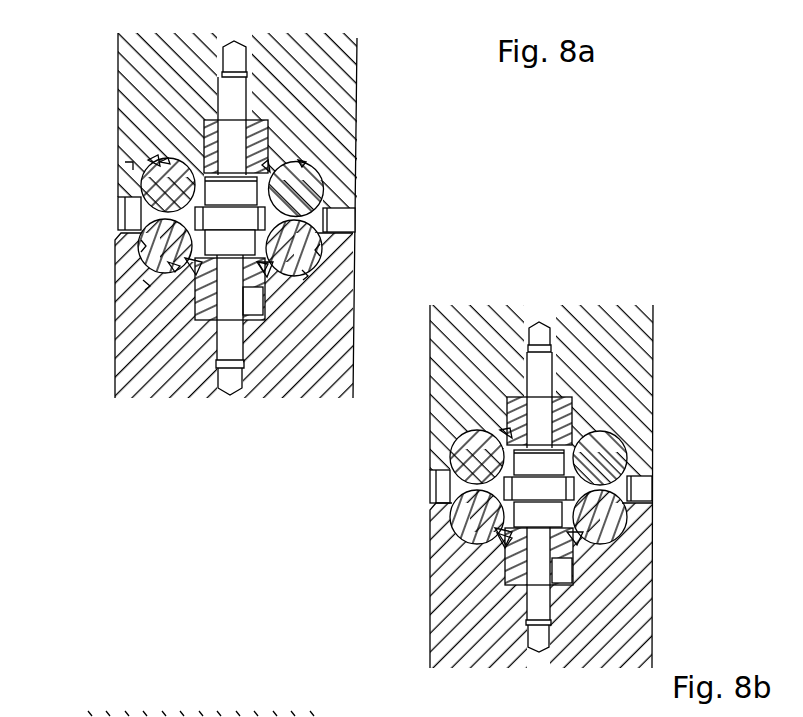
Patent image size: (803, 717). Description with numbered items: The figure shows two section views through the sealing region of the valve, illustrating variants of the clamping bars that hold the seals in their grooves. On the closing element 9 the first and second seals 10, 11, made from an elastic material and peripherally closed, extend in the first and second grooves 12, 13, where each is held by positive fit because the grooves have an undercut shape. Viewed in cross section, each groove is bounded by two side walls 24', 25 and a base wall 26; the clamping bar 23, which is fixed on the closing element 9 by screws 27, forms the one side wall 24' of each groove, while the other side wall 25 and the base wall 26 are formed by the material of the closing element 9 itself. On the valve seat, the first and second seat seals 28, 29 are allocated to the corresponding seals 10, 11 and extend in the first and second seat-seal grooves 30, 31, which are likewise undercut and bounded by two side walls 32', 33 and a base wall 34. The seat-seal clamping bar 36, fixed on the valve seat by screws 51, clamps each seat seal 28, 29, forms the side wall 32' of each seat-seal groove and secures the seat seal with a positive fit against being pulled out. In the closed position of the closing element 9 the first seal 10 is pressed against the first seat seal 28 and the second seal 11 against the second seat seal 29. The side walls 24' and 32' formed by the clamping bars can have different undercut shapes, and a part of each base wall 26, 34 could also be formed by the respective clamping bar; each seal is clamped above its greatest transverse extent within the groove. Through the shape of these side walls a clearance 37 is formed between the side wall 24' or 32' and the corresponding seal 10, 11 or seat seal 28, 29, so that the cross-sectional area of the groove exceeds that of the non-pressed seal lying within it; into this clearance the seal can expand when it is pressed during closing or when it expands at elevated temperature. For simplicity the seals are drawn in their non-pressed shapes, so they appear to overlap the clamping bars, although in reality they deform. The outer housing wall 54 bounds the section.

In FIG. 8A, the closing element 9 is at (110, 370).
In FIG. 8B, the closing element 9 is at (426, 562).
In FIG. 8A, the first seal 10 is at (292, 258).
In FIG. 8B, the first seal 10 is at (593, 523).
In FIG. 8A, the second seal 11 is at (158, 238).
In FIG. 8B, the second seal 11 is at (473, 522).
In FIG. 8A, the first groove 12 is at (264, 268).
In FIG. 8B, the first groove 12 is at (583, 537).
In FIG. 8A, the second groove 13 is at (172, 266).
In FIG. 8B, the second groove 13 is at (507, 538).
In FIG. 8A, the clamping bar 23 is at (253, 305).
In FIG. 8B, the clamping bar 23 is at (567, 577).
In FIG. 8A, the side wall 24' is at (228, 295).
In FIG. 8A, the side wall 25 is at (143, 250).
In FIG. 8A, the base wall 26 is at (145, 284).
In FIG. 8A, the screws 27 is at (223, 338).
In FIG. 8B, the screws 27 is at (538, 589).
In FIG. 8A, the first seat seal 28 is at (302, 180).
In FIG. 8B, the first seat seal 28 is at (598, 460).
In FIG. 8A, the second seat seal 29 is at (193, 171).
In FIG. 8B, the second seat seal 29 is at (473, 453).
In FIG. 8A, the first seat-seal groove 30 is at (270, 184).
In FIG. 8B, the first seat-seal groove 30 is at (582, 437).
In FIG. 8A, the second seat-seal groove 31 is at (157, 157).
In FIG. 8B, the second seat-seal groove 31 is at (507, 434).
In FIG. 8A, the side wall 32' is at (230, 122).
In FIG. 8A, the side wall 33 is at (146, 183).
In FIG. 8B, the side wall 33 is at (539, 462).
In FIG. 8A, the base wall 34 is at (162, 160).
In FIG. 8A, the seat-seal clamping bar 36 is at (258, 132).
In FIG. 8B, the seat-seal clamping bar 36 is at (567, 408).
In FIG. 8A, the clearance 37 is at (266, 275).
In FIG. 8B, the clearance 37 is at (513, 405).
In FIG. 8A, the screws 51 is at (230, 93).
In FIG. 8B, the screws 51 is at (539, 385).
In FIG. 8A, the housing wall 54 is at (360, 53).
In FIG. 8B, the housing wall 54 is at (657, 334).